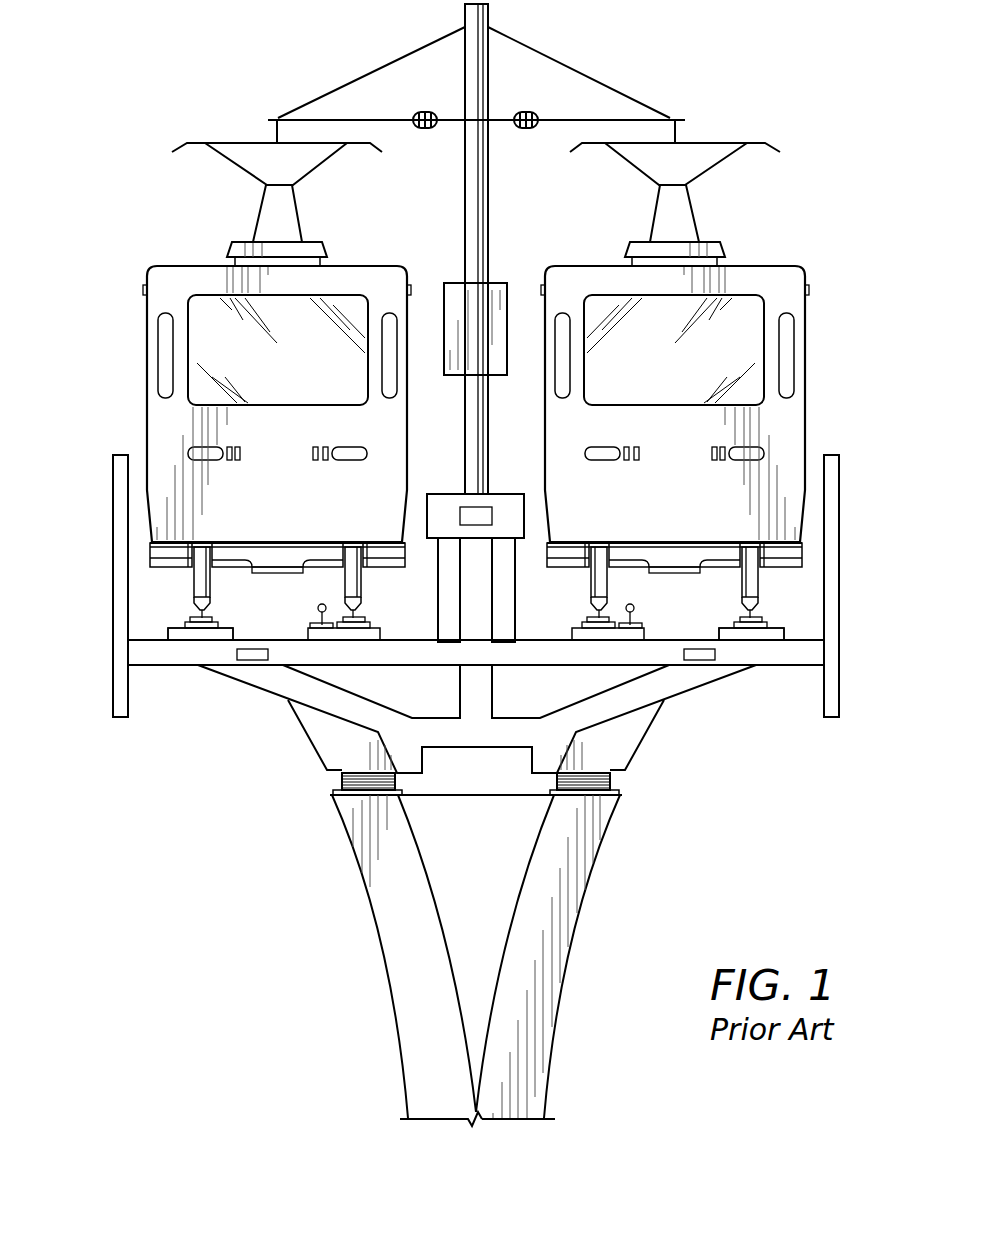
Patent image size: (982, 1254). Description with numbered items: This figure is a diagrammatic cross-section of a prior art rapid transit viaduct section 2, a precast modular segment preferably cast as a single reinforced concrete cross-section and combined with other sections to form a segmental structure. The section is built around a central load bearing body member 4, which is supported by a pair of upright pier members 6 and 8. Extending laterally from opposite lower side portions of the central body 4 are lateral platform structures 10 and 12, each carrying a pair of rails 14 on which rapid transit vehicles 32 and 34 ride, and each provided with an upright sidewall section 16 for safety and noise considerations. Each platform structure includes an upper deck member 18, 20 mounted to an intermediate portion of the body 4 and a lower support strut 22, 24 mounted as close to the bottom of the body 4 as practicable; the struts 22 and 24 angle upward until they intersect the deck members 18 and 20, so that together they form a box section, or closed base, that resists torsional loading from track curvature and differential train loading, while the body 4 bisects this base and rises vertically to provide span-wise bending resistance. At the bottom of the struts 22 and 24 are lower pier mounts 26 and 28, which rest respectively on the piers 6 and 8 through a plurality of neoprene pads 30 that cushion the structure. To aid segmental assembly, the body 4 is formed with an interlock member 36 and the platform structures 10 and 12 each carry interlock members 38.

The rapid transit viaduct section 2 is at (180, 735).
The central load bearing body member 4 is at (496, 492).
The upright pier member 6 is at (402, 998).
The upright pier member 8 is at (568, 962).
The lateral platform structure 10 is at (284, 716).
The lateral platform structure 12 is at (668, 716).
The rails 14 is at (198, 615).
The upright sidewall section 16 is at (113, 708).
The deck member 18 is at (423, 635).
The deck member 20 is at (532, 635).
The lower support strut 22 is at (372, 698).
The lower support strut 24 is at (585, 700).
The lower pier mount 26 is at (325, 768).
The lower pier mount 28 is at (627, 768).
The neoprene pads 30 is at (352, 793).
The rapid transit vehicle 32 is at (198, 263).
The rapid transit vehicle 34 is at (756, 263).
The interlock member 36 is at (467, 510).
The interlock members 38 is at (252, 660).